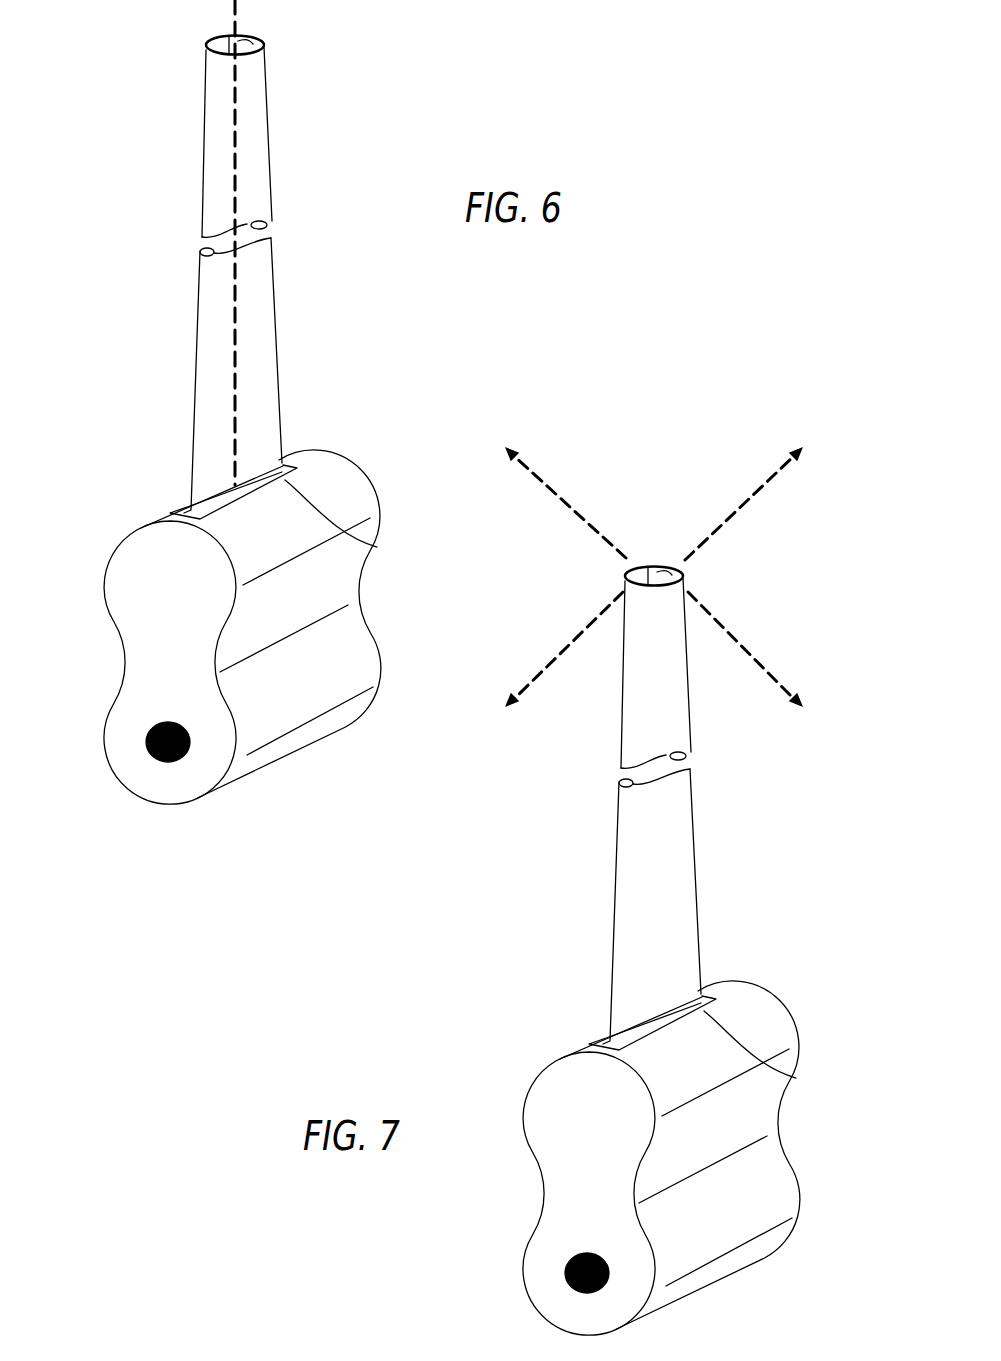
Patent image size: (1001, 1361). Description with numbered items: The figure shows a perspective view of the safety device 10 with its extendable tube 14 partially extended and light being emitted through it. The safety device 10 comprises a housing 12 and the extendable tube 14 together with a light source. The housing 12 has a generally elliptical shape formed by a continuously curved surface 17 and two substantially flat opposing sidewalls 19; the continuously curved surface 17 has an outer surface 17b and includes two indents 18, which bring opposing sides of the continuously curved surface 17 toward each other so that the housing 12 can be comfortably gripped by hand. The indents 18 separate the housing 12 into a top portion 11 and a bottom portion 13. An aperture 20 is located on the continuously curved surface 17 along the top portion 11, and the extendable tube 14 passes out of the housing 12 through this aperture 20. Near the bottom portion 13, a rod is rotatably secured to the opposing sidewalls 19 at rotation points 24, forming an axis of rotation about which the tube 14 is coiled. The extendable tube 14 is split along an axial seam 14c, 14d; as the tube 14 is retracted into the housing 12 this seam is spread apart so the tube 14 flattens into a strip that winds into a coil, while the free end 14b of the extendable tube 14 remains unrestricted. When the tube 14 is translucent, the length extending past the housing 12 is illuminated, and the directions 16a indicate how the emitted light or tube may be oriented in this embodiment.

In FIG. 6, the safety device 10 is at (104, 126).
In FIG. 7, the safety device 10 is at (667, 893).
In FIG. 6, the top portion 11 is at (183, 600).
In FIG. 7, the top portion 11 is at (589, 1117).
In FIG. 6, the housing 12 is at (106, 516).
In FIG. 7, the housing 12 is at (660, 1160).
In FIG. 6, the bottom portion 13 is at (193, 805).
In FIG. 7, the bottom portion 13 is at (599, 1322).
In FIG. 6, the extendable tube 14 is at (270, 125).
In FIG. 7, the extendable tube 14 is at (658, 774).
In FIG. 6, the free end 14b is at (266, 44).
In FIG. 7, the free end 14b is at (694, 585).
In FIG. 6, the axial seam 14c is at (211, 38).
In FIG. 7, the axial seam 14c is at (600, 569).
In FIG. 6, the axial seam 14d is at (252, 37).
In FIG. 7, the axial seam 14d is at (682, 541).
In FIG. 6, the stem axis / pivot directions 16a is at (240, 290).
In FIG. 7, the stem axis / pivot directions 16a is at (655, 577).
In FIG. 6, the continuously curved surface 17 is at (367, 484).
In FIG. 7, the continuously curved surface 17 is at (734, 1155).
In FIG. 6, the outer surface 17b is at (297, 615).
In FIG. 7, the outer surface 17b is at (707, 1132).
In FIG. 6, the indents 18 is at (362, 612).
In FIG. 7, the indents 18 is at (659, 1178).
In FIG. 6, the sidewalls 19 is at (185, 683).
In FIG. 7, the sidewalls 19 is at (591, 1200).
In FIG. 6, the aperture 20 is at (376, 548).
In FIG. 7, the aperture 20 is at (772, 1053).
In FIG. 6, the rotation points 24 is at (148, 746).
In FIG. 7, the rotation points 24 is at (539, 1296).